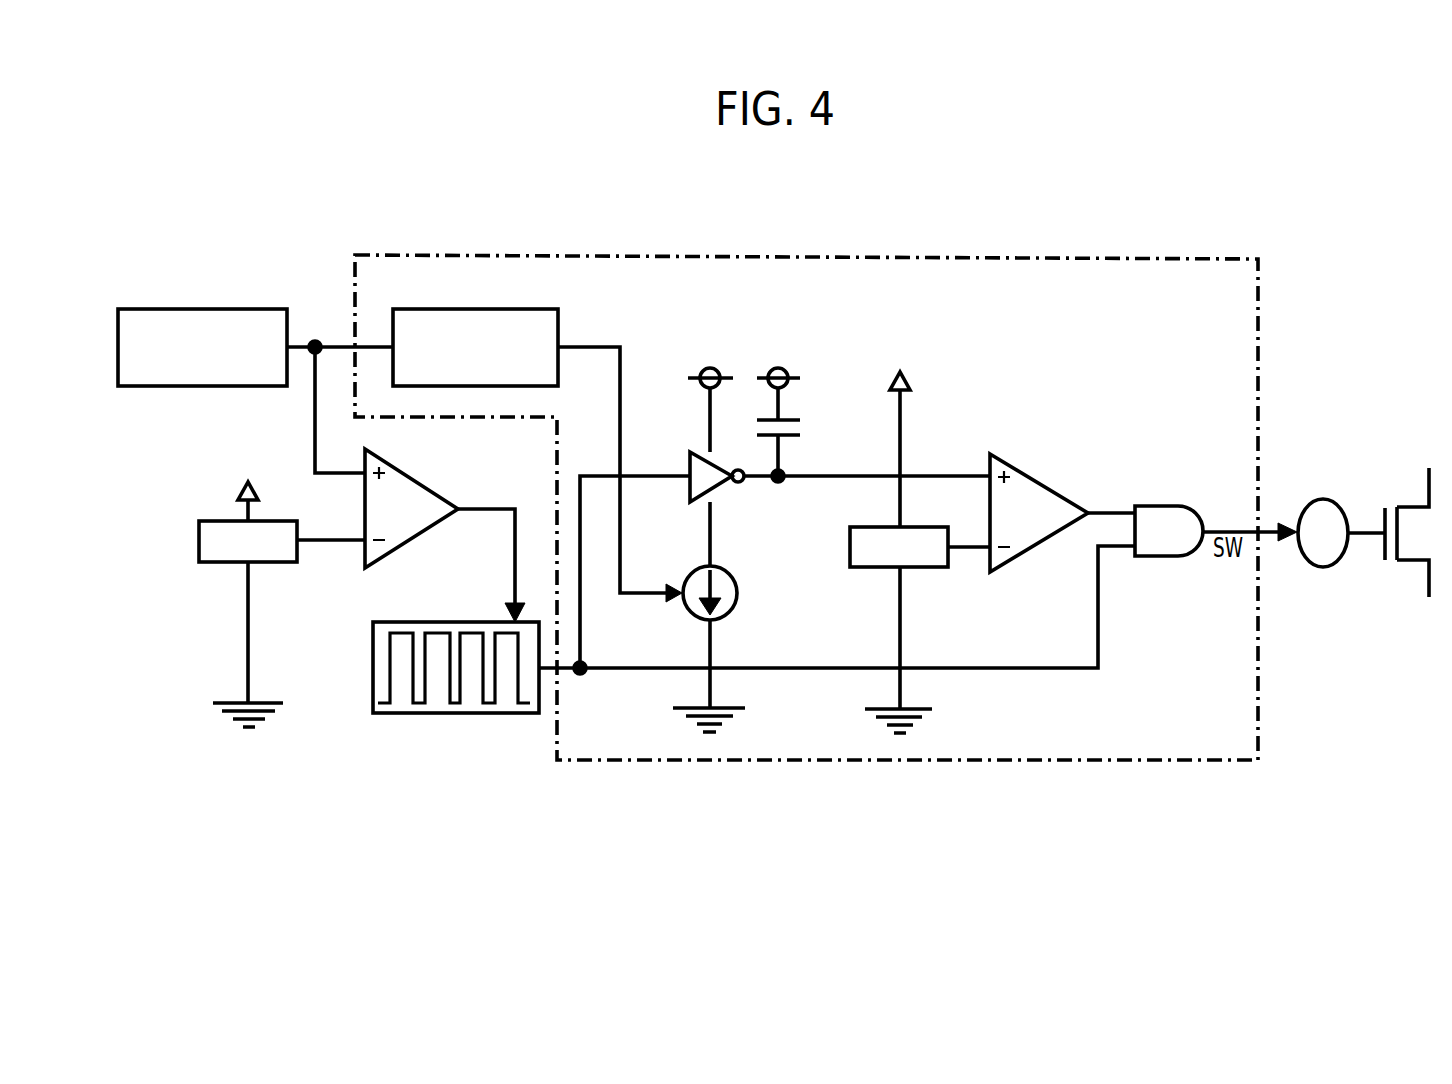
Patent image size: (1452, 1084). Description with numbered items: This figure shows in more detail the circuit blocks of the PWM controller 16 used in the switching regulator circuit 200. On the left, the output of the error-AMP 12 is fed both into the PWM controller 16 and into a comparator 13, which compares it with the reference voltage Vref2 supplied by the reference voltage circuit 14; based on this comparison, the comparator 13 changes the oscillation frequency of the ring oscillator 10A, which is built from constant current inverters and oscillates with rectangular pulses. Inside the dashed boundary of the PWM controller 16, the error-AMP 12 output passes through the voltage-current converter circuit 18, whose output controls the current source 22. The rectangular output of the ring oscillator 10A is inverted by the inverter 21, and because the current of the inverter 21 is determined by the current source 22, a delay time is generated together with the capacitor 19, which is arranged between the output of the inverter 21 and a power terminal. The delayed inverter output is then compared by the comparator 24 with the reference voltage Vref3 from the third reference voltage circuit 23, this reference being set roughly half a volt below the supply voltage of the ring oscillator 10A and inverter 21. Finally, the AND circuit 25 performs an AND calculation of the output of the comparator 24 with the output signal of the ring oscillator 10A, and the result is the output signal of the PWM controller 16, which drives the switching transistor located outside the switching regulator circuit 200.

The switching regulator circuit 200 is at (1154, 235).
The PWM controller 16 is at (1258, 358).
The error-AMP 12 is at (262, 308).
The voltage-current converter circuit 18 is at (534, 308).
The comparator 13 is at (415, 540).
The reference voltage circuit 14 is at (210, 564).
The ring oscillator 10A is at (373, 668).
The inverter 21 is at (714, 486).
The capacitor 19 is at (808, 430).
The current source 22 is at (728, 613).
The third reference voltage (Vref3) circuit 23 is at (922, 568).
The comparator 24 is at (1040, 545).
The AND circuit 25 is at (1160, 505).